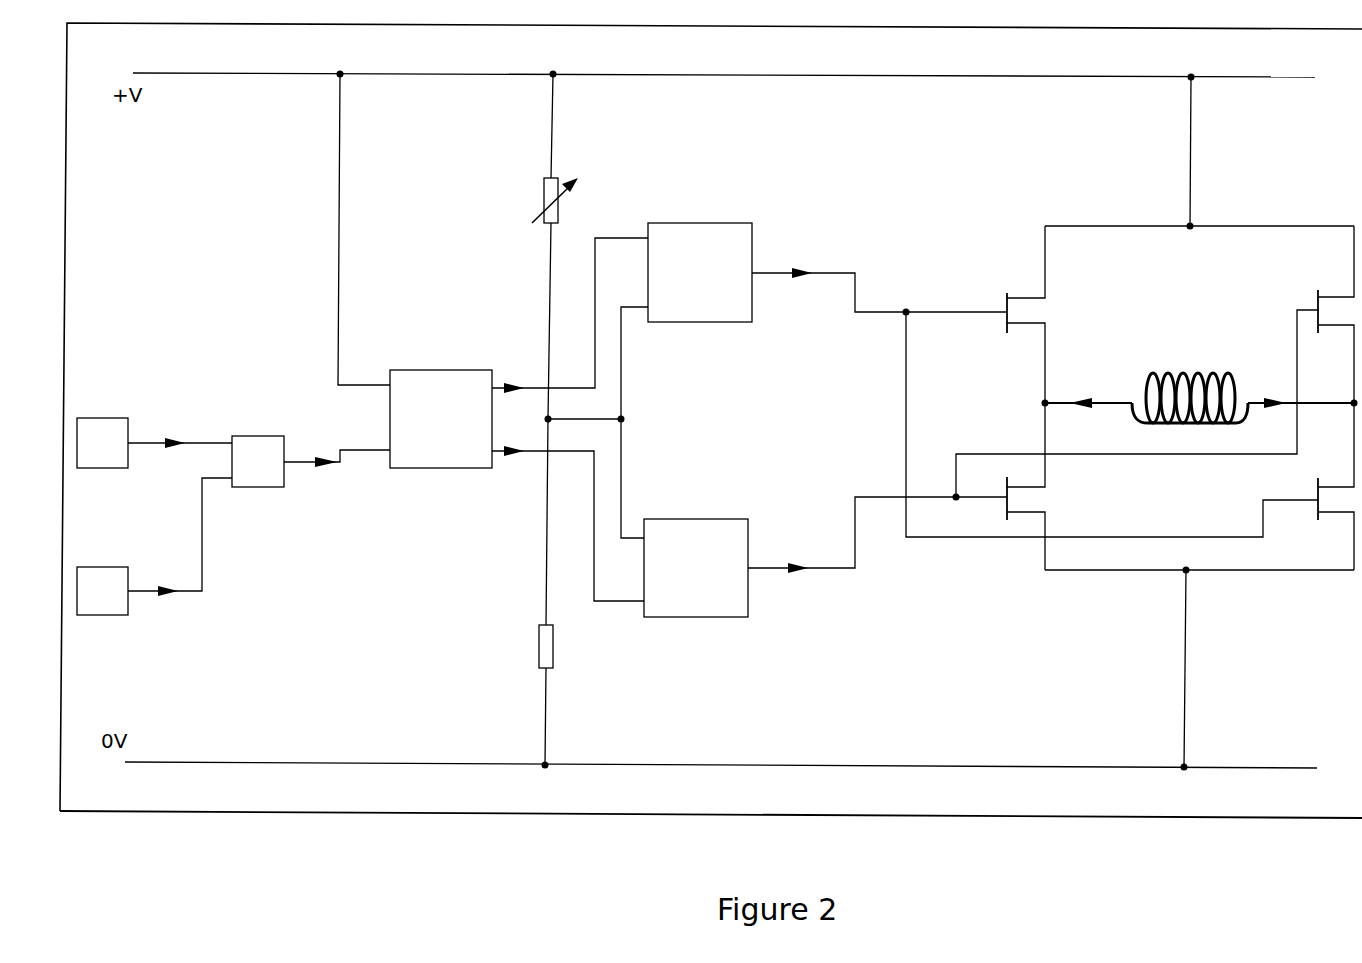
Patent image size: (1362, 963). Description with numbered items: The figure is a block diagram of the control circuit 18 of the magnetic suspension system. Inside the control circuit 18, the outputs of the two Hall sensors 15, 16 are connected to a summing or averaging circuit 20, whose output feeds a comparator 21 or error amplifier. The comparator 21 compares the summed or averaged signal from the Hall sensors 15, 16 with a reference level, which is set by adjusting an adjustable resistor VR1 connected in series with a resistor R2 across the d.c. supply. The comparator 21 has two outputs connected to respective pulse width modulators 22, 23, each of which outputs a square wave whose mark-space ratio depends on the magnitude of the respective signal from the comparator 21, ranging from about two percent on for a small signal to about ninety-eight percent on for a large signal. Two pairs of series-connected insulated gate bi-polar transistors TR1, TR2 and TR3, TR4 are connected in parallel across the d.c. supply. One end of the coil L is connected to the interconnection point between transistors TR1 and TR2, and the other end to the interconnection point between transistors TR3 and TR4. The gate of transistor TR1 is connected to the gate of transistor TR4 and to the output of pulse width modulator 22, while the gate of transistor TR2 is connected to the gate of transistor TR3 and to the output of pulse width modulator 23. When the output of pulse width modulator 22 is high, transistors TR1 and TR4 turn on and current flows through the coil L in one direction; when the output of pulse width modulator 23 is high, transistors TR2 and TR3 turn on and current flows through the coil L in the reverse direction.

The Hall sensor 15 is at (102, 443).
The Hall sensor 16 is at (102, 591).
The control circuit 18 is at (405, 820).
The summing or averaging circuit 20 is at (258, 461).
The comparator 21 is at (441, 419).
The pulse width modulator 22 is at (700, 272).
The pulse width modulator 23 is at (696, 568).
The adjustable resistor VR1 is at (574, 246).
The resistor R2 is at (564, 592).
The insulated gate bi-polar transistor TR1 is at (1003, 314).
The insulated gate bi-polar transistor TR2 is at (1003, 486).
The insulated gate bi-polar transistor TR3 is at (1312, 314).
The insulated gate bi-polar transistor TR4 is at (1312, 486).
The coil L is at (1160, 382).